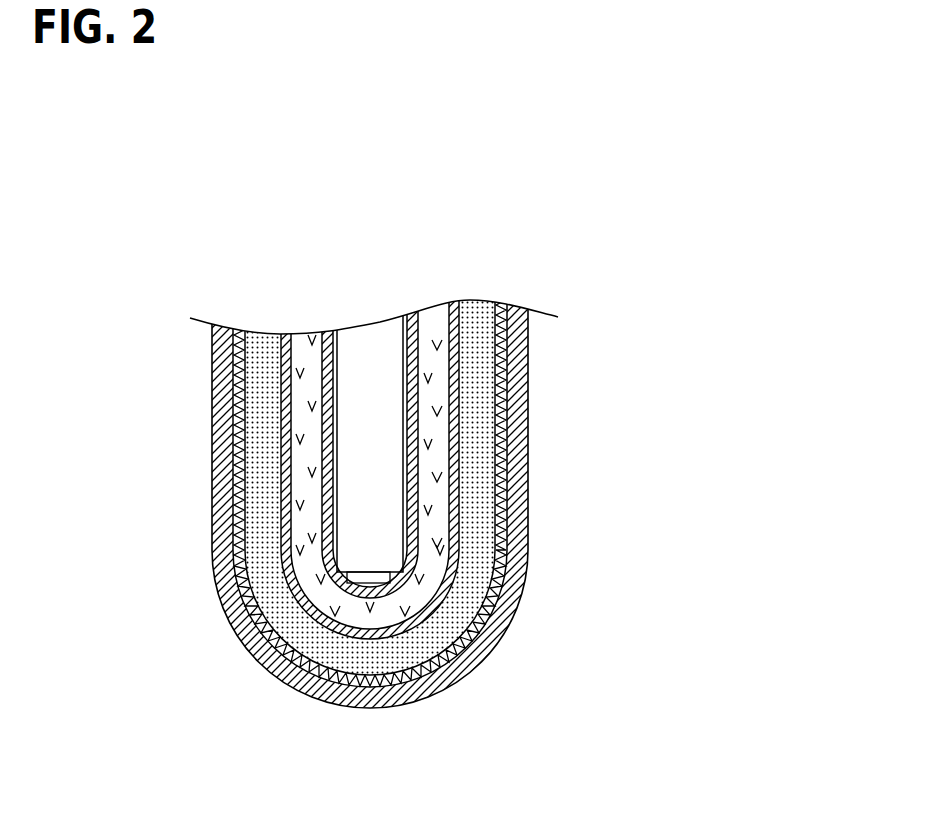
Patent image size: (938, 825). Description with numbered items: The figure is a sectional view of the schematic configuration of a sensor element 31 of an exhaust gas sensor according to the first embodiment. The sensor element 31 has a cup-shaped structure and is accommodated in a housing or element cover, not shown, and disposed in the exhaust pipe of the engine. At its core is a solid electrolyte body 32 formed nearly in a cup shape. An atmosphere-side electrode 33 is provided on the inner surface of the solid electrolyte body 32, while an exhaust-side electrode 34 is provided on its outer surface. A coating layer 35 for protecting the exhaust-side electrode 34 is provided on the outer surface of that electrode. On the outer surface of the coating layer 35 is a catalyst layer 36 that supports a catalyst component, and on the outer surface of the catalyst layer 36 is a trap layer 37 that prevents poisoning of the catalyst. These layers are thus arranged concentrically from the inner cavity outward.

The sensor element 31 is at (552, 388).
The solid electrolyte body 32 is at (435, 489).
The atmosphere-side electrode 33 is at (405, 446).
The exhaust-side electrode 34 is at (460, 513).
The coating layer 35 is at (478, 552).
The catalyst layer 36 is at (482, 634).
The trap layer 37 is at (447, 690).